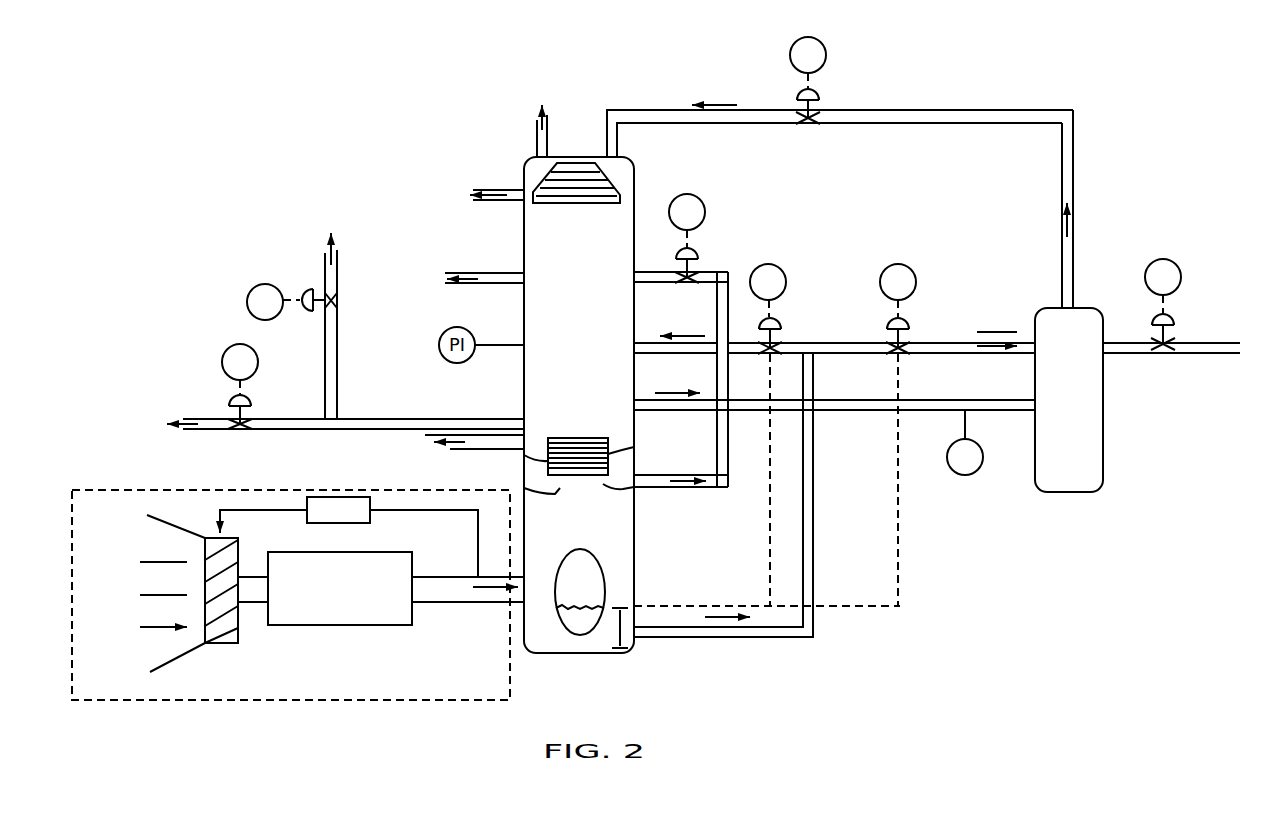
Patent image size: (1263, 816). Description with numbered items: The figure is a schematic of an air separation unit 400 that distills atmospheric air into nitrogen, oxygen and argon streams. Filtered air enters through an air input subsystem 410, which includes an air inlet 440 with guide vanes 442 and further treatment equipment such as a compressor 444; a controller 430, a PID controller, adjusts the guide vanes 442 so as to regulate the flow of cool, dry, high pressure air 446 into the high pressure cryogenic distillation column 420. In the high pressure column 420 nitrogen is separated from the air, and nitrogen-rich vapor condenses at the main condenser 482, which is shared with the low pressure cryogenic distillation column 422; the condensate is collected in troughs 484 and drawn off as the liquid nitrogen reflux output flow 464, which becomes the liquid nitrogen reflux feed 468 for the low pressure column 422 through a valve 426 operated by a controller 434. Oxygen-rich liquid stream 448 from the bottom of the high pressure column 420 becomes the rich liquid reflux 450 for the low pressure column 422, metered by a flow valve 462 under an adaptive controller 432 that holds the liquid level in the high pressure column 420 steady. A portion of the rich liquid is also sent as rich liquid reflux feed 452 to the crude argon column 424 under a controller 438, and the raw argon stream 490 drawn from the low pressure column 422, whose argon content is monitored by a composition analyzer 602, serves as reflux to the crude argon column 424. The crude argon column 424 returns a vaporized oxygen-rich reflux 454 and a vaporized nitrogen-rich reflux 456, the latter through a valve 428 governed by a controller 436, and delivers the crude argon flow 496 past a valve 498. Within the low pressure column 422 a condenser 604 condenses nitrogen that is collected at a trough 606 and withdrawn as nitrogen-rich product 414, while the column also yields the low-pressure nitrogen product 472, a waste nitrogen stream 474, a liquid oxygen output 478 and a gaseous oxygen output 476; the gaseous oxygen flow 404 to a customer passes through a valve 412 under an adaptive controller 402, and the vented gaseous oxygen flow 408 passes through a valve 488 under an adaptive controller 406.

The air separation unit 400 is at (942, 648).
The adaptive controller 402 is at (222, 362).
The GOX flow 404 is at (207, 432).
The adaptive controller 406 is at (247, 302).
The GOX flow 408 is at (335, 265).
The air input subsystem 410 is at (341, 702).
The valve 412 is at (229, 420).
The nitrogen-rich product 414 is at (513, 204).
The high pressure cryogenic distillation column 420 is at (589, 655).
The low pressure cryogenic distillation column 422 is at (590, 335).
The crude argon column 424 is at (1072, 489).
The valve 426 is at (692, 272).
The valve 428 is at (815, 109).
The controller 430 is at (306, 522).
The adaptive controller 432 is at (769, 263).
The controller 434 is at (687, 195).
The controller 436 is at (827, 53).
The controller 438 is at (899, 263).
The air inlet 440 is at (163, 644).
The guide vanes 442 is at (228, 645).
The compressor 444 is at (342, 627).
The high pressure air 446 is at (475, 604).
The oxygen-rich liquid stream 448 is at (699, 640).
The rich liquid reflux 450 is at (647, 344).
The rich liquid reflux feed 452 is at (949, 355).
The vaporized oxygen-rich liquid reflux 454 is at (1075, 170).
The vaporized nitrogen-rich liquid reflux 456 is at (649, 112).
The flow valve 462 is at (776, 343).
The LIN reflux output flow 464 is at (678, 490).
The LIN reflux feed 468 is at (650, 273).
The low-pressure nitrogen product 472 is at (537, 142).
The waste nitrogen stream 474 is at (491, 284).
The gaseous oxygen output 476 is at (373, 432).
The liquid oxygen output 478 is at (474, 452).
The main condenser 482 is at (582, 442).
The troughs 484 is at (627, 500).
The valve 488 is at (340, 304).
The raw argon stream 490 is at (679, 412).
The crude argon flow 496 is at (1206, 351).
The valve 498 is at (1169, 338).
The composition analyzer 602 is at (969, 477).
The condenser 604 is at (573, 166).
The trough 606 is at (525, 214).